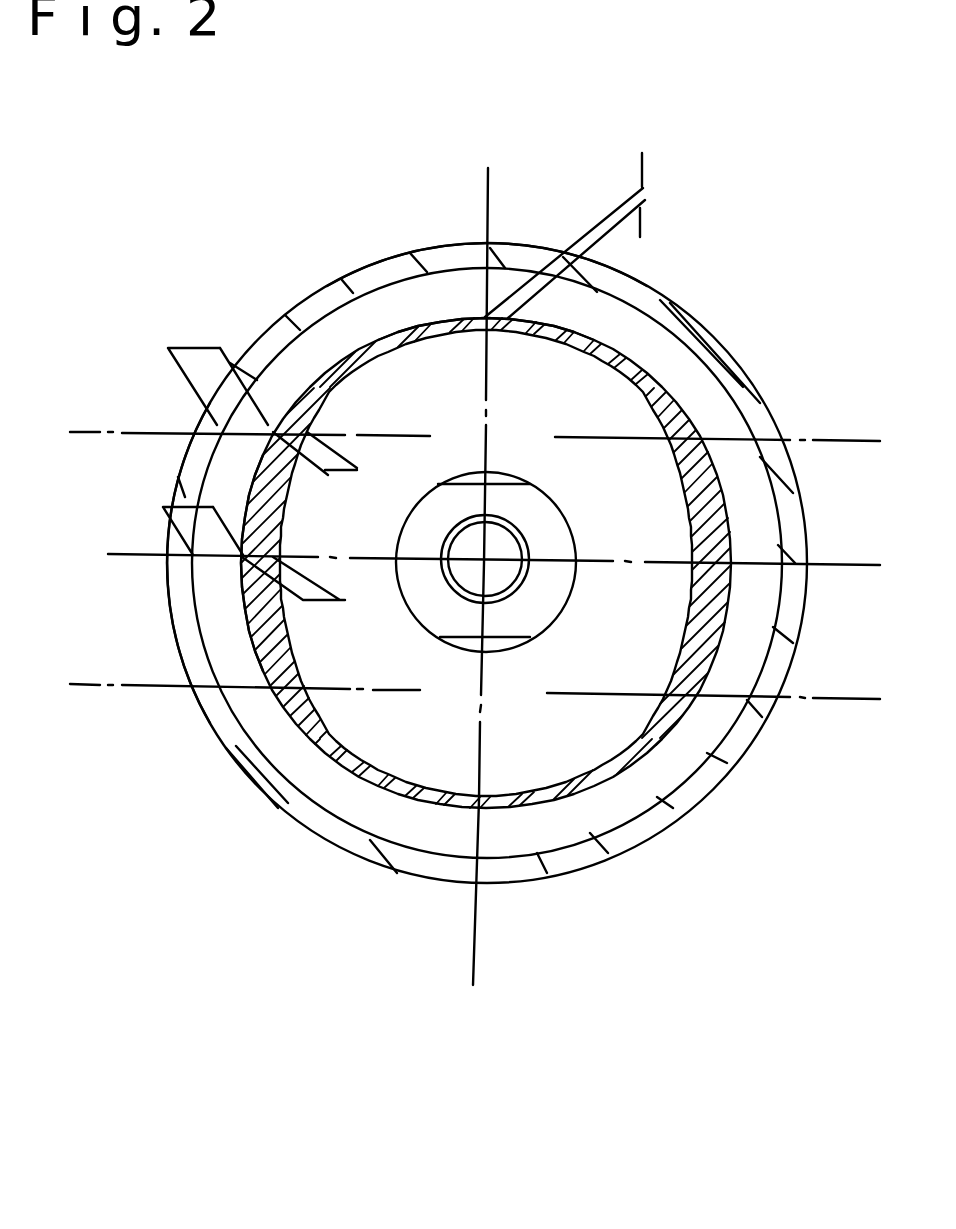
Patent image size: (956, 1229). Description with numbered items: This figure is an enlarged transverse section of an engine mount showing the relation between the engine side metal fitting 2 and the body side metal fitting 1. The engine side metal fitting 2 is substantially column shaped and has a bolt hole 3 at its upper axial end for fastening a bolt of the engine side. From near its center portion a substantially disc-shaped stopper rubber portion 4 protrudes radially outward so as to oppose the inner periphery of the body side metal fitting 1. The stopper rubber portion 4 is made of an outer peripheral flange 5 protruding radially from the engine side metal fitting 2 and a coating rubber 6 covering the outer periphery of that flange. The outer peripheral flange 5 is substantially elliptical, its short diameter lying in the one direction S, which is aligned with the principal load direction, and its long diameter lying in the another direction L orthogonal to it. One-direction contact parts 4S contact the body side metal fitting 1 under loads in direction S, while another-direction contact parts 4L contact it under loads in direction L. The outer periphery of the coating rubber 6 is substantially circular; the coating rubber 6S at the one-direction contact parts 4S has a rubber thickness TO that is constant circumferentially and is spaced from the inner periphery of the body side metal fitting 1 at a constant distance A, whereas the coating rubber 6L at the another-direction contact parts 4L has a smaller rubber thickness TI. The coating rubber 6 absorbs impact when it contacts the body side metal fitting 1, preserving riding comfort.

The body side metal fitting 1 is at (451, 599).
The engine side metal fitting 2 is at (542, 605).
The bolt hole 3 is at (502, 547).
The stopper rubber portion 4 is at (550, 735).
The another-direction contact parts 4L is at (446, 296).
The one-direction contact parts 4S is at (224, 627).
The outer peripheral flange 5 is at (438, 720).
The coating rubber 6 is at (507, 807).
The coating rubber at another-direction contact parts 6L is at (390, 337).
The coating rubber at one-direction contact parts 6S is at (262, 642).
The another direction L is at (487, 552).
The one direction S is at (478, 553).
The constant distance A is at (195, 340).
The rubber thickness in one direction TO is at (337, 462).
The rubber thickness in another direction TI is at (565, 235).